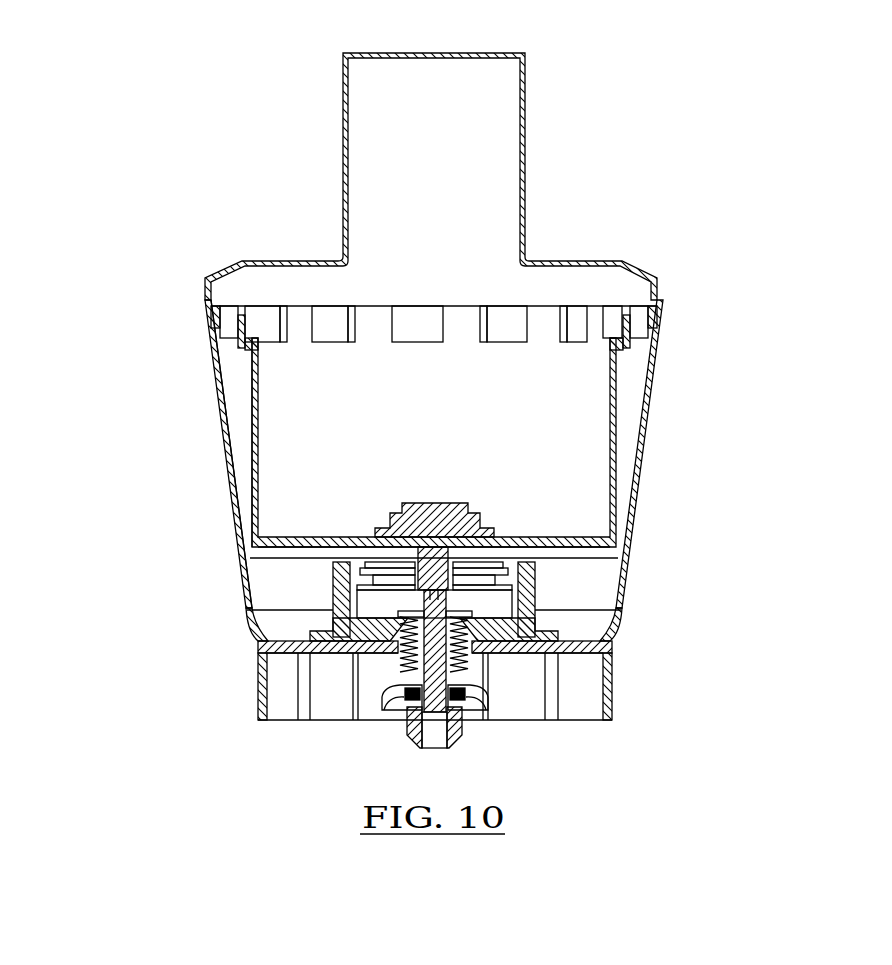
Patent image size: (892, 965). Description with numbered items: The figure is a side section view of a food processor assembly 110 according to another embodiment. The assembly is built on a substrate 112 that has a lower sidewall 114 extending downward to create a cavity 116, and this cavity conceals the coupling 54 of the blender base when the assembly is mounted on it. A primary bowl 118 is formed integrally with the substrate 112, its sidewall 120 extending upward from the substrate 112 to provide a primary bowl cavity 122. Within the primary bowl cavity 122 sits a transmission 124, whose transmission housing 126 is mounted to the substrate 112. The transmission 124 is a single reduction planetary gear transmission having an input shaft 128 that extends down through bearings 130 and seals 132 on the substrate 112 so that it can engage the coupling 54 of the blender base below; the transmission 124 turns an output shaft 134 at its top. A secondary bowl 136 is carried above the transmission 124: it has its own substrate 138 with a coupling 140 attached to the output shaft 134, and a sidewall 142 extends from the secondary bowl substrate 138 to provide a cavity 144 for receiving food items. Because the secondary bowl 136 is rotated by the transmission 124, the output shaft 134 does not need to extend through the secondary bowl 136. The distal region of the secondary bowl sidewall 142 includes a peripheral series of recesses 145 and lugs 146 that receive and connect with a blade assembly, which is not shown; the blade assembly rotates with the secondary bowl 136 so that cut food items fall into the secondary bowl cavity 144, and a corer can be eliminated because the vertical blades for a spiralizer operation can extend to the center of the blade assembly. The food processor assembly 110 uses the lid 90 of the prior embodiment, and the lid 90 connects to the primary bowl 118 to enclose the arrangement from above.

The food processor assembly 110 is at (634, 64).
The lid 90 is at (549, 259).
The lugs 146 is at (547, 323).
The recesses 145 is at (577, 318).
The cavity 144 is at (272, 367).
The sidewall 142 is at (255, 390).
The secondary bowl 136 is at (248, 420).
The substrate 138 is at (275, 533).
The coupling 140 is at (432, 503).
The output shaft 134 is at (436, 562).
The primary bowl cavity 122 is at (645, 368).
The primary bowl 118 is at (658, 410).
The sidewall 120 is at (652, 442).
The transmission 124 is at (548, 600).
The substrate 112 is at (620, 644).
The transmission housing 126 is at (540, 638).
The lower sidewall 114 is at (612, 710).
The cavity 116 is at (583, 710).
The bearings 130 is at (400, 655).
The input shaft 128 is at (495, 655).
The seals 132 is at (410, 710).
The coupling 54 is at (460, 737).